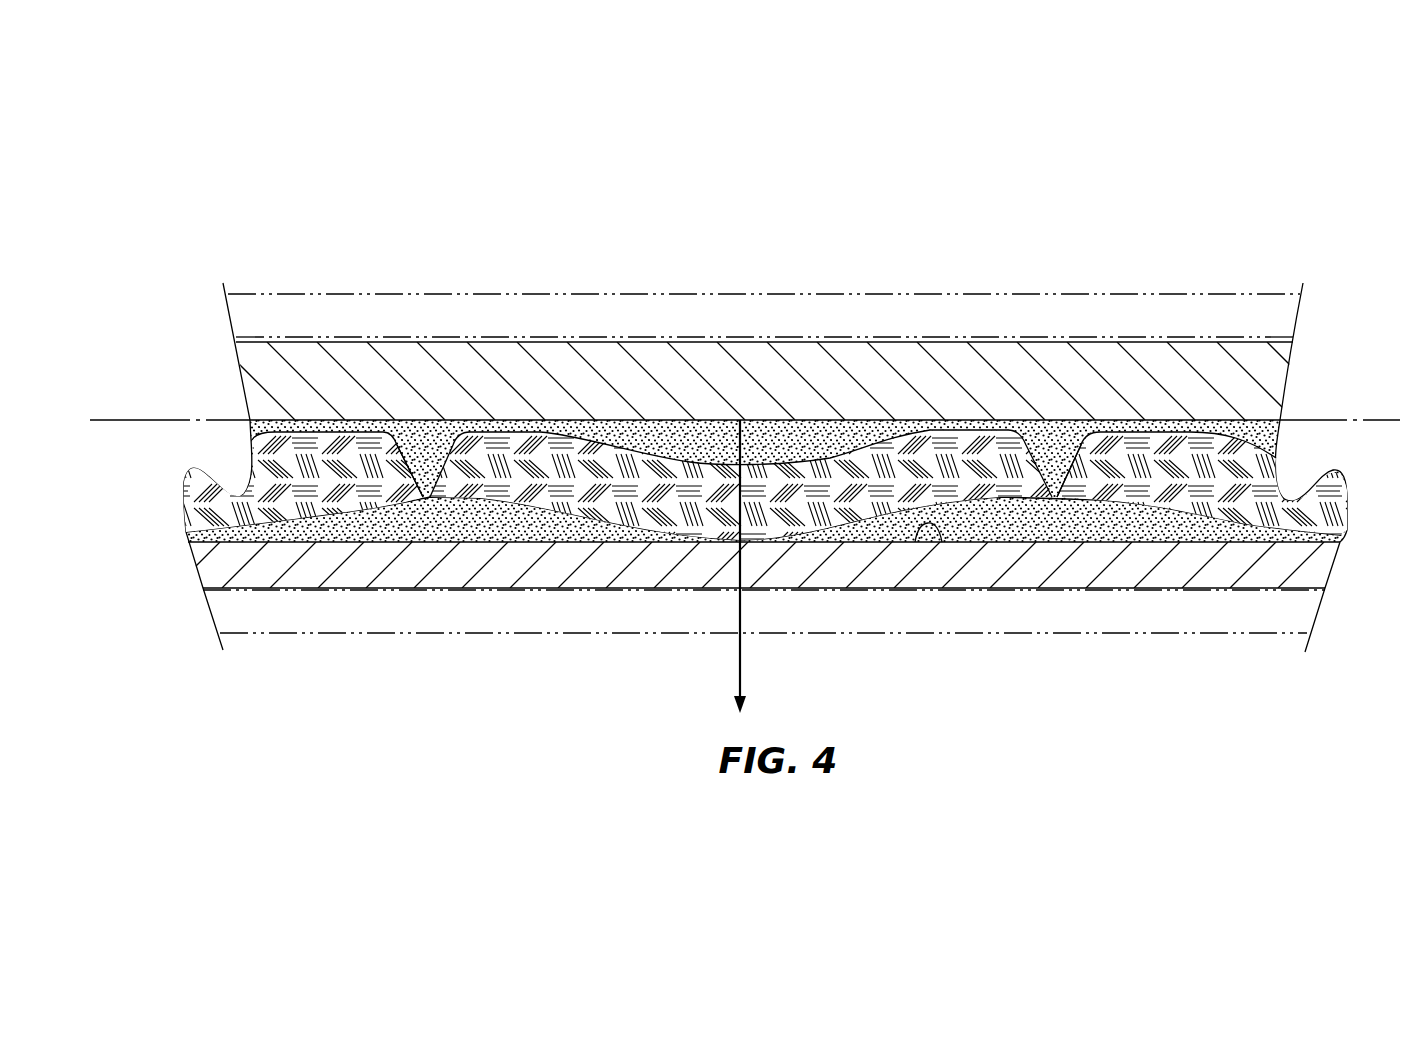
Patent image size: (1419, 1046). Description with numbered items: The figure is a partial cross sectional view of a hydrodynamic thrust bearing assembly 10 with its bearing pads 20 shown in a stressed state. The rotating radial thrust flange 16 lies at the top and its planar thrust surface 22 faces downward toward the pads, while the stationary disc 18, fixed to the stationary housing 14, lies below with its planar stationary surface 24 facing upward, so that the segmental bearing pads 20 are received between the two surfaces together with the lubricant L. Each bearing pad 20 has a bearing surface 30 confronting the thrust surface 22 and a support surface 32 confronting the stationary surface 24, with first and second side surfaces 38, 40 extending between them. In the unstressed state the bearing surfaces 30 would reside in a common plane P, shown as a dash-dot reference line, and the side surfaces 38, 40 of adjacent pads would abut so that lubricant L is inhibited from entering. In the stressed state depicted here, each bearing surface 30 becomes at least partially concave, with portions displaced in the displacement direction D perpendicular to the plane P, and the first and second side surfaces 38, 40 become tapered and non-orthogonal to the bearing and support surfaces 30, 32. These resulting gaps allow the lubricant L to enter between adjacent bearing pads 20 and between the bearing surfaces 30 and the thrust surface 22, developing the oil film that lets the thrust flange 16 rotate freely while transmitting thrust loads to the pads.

The hydrodynamic thrust bearing assembly 10 is at (1239, 213).
The stationary housing 14 is at (1225, 633).
The radial thrust flange 16 is at (263, 357).
The stationary disc 18 is at (210, 572).
The segmental bearing pads 20 is at (765, 457).
The thrust surface 22 is at (684, 433).
The stationary surface 24 is at (942, 542).
The bearing surface 30 is at (632, 452).
The support surface 32 is at (833, 530).
The first side surface 38 is at (452, 440).
The second side surface 40 is at (405, 450).
The hydrodynamic lubricant film L is at (812, 440).
The plane P is at (1365, 418).
The displacement direction D is at (738, 669).